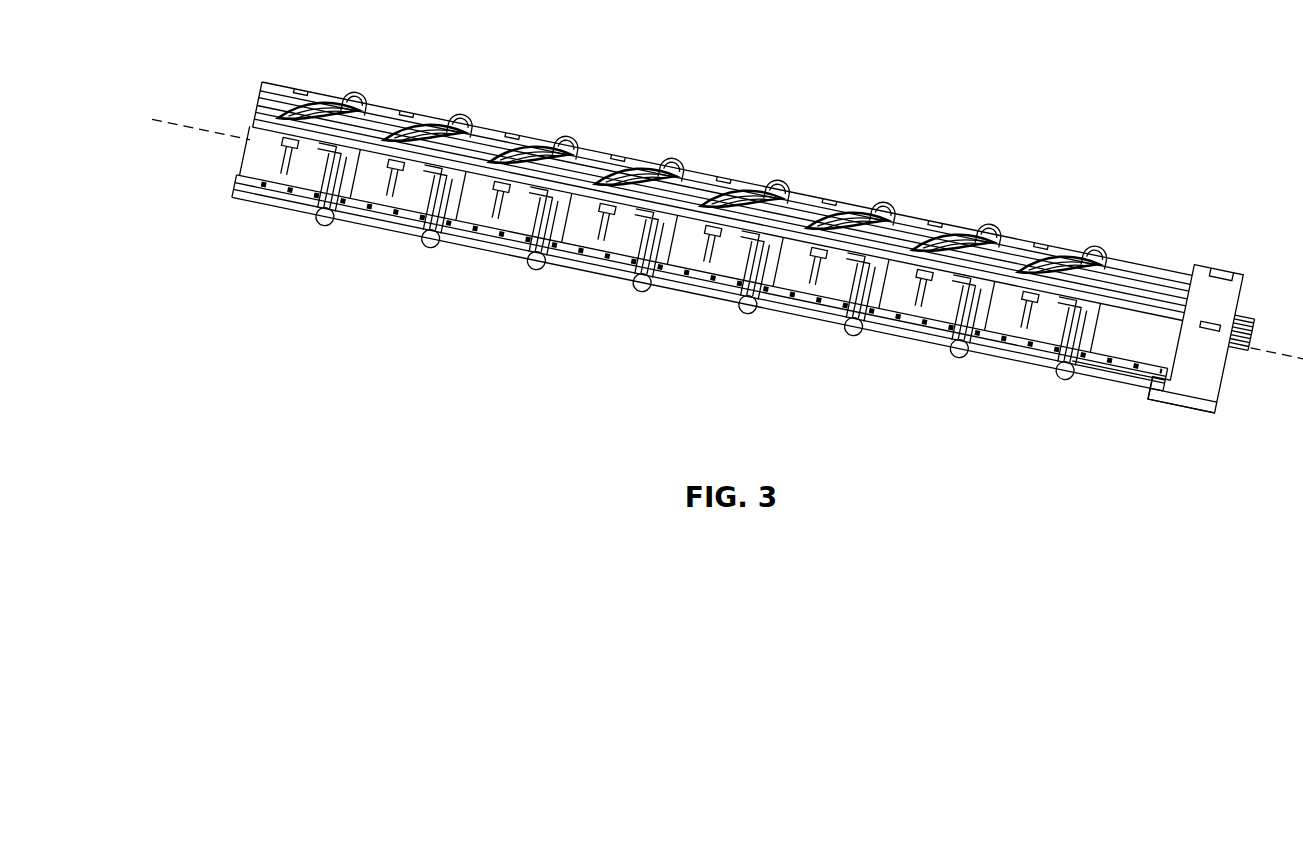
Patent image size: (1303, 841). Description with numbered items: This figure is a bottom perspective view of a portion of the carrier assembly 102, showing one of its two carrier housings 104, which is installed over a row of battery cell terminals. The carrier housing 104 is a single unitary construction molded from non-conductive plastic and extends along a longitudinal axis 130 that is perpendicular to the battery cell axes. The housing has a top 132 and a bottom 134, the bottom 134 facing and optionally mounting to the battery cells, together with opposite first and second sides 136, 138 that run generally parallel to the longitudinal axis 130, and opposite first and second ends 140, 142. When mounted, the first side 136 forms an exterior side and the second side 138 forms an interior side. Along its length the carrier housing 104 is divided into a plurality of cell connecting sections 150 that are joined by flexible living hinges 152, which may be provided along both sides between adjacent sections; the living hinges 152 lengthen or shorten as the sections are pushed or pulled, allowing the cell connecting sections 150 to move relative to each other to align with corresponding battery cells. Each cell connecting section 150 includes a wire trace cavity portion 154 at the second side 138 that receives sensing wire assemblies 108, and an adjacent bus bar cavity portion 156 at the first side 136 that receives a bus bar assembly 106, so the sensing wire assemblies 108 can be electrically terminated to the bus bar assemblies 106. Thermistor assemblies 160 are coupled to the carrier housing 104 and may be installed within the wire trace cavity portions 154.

The carrier assembly 102 is at (1050, 116).
The carrier housing 104 is at (1173, 403).
The bus bar assembly 106 is at (810, 295).
The sensing wire assembly 108 is at (300, 95).
The longitudinal axis 130 is at (190, 126).
The top 132 is at (1090, 370).
The bottom 134 is at (1090, 345).
The first side 136 is at (252, 198).
The second side 138 is at (270, 84).
The first end 140 is at (240, 163).
The second end 142 is at (1212, 402).
The cell connecting section 150 is at (588, 268).
The living hinge 152 is at (532, 270).
The wire trace cavity portion 154 is at (843, 262).
The bus bar cavity portion 156 is at (942, 322).
The thermistor assembly 160 is at (1035, 260).